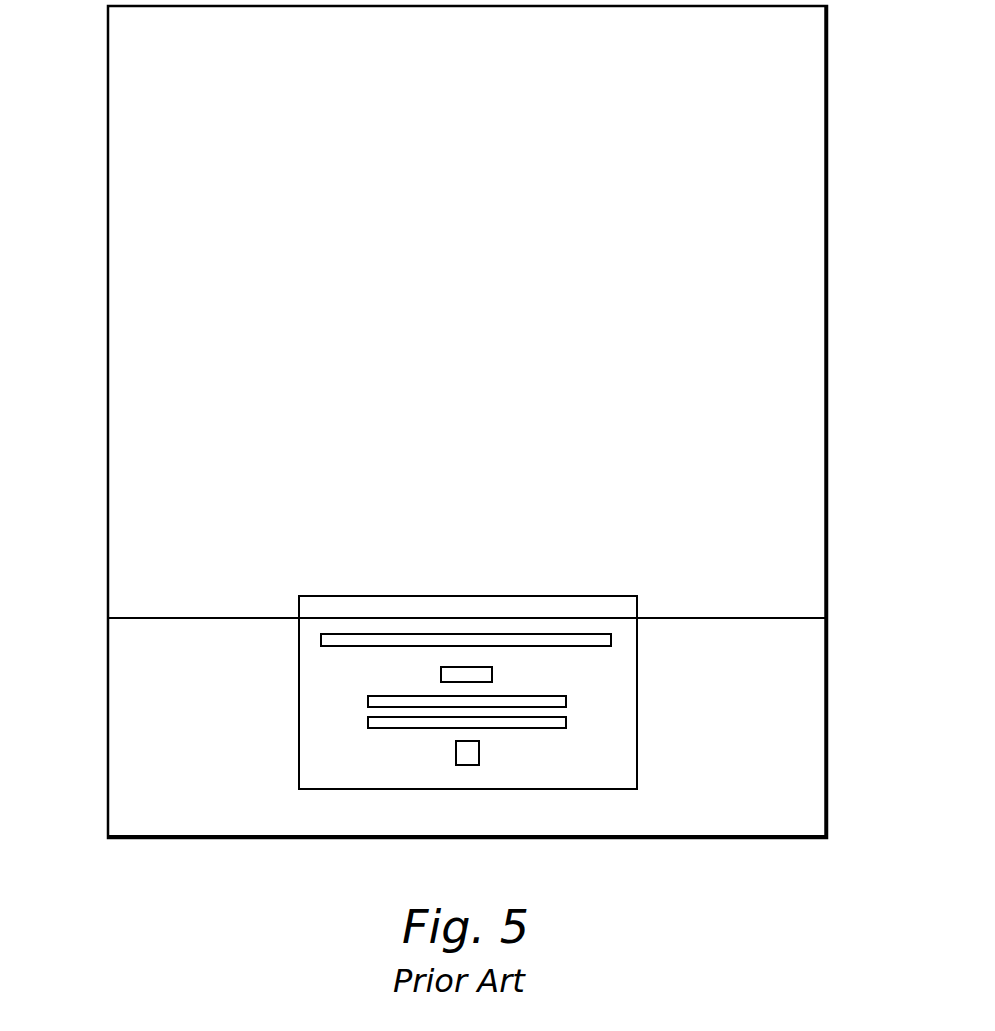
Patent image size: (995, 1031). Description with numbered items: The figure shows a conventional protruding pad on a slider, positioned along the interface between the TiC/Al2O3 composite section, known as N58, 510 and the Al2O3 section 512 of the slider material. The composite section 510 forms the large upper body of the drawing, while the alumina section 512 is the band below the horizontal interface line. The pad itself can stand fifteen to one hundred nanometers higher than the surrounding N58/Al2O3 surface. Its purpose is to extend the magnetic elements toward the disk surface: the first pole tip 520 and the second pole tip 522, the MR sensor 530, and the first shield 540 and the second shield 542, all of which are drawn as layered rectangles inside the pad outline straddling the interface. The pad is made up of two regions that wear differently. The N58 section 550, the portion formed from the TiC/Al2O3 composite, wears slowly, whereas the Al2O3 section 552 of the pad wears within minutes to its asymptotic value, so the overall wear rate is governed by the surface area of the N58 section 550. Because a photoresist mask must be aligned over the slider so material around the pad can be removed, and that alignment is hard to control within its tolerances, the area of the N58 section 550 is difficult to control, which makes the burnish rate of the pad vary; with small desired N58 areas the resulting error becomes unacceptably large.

The TiC/Al2O3 composite section 510 is at (827, 257).
The Al2O3 section 512 is at (157, 761).
The first pole tip 520 is at (566, 722).
The second pole tip 522 is at (479, 755).
The MR sensor 530 is at (492, 674).
The first shield 540 is at (611, 640).
The second shield 542 is at (566, 700).
The N58 section 550 is at (605, 596).
The Al2O3 section of the protruding pad 552 is at (299, 697).